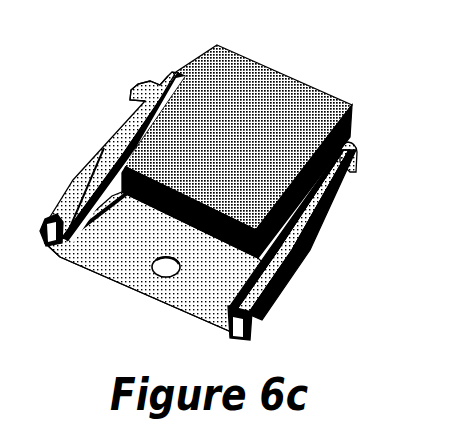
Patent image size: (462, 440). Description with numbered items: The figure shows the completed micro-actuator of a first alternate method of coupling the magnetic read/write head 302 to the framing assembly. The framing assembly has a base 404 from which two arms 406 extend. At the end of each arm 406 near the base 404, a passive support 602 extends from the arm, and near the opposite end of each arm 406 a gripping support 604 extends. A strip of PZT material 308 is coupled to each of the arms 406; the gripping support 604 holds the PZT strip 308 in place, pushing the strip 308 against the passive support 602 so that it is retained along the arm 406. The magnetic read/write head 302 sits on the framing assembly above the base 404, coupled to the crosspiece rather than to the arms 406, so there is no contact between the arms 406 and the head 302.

The magnetic read/write head 302 is at (289, 72).
The strip of PZT material 308 is at (83, 163).
The base 404 is at (167, 298).
The arm 406 is at (123, 133).
The passive support 602 is at (48, 236).
The gripping support 604 is at (346, 200).